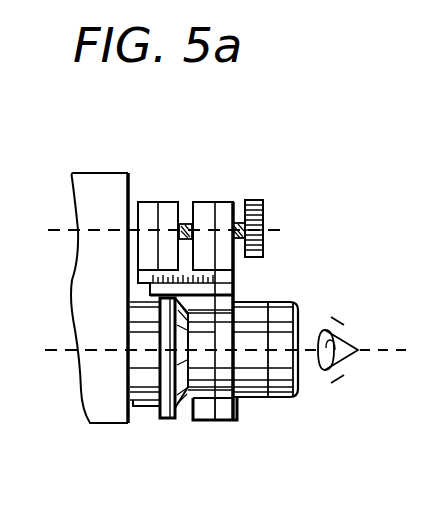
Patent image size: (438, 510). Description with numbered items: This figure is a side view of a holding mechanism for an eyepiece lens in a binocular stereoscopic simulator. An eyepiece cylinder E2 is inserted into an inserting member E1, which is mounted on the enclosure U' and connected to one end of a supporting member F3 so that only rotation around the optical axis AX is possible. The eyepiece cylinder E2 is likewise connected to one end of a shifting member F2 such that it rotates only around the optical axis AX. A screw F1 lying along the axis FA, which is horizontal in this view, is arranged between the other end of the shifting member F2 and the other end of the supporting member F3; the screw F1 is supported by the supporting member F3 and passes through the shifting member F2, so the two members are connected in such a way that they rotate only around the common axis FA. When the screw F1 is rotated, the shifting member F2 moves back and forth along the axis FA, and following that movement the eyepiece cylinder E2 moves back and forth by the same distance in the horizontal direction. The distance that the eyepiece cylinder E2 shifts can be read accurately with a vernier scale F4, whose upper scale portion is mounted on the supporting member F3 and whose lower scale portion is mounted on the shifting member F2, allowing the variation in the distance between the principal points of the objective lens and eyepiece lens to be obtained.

The enclosure U' is at (99, 278).
The supporting member F3 is at (151, 210).
The shifting member F2 is at (201, 208).
The screw F1 is at (263, 204).
The vernier scale F4 is at (225, 269).
The axis FA is at (296, 228).
The optical axis AX is at (397, 346).
The inserting member E1 is at (138, 408).
The eyepiece cylinder E2 is at (267, 399).